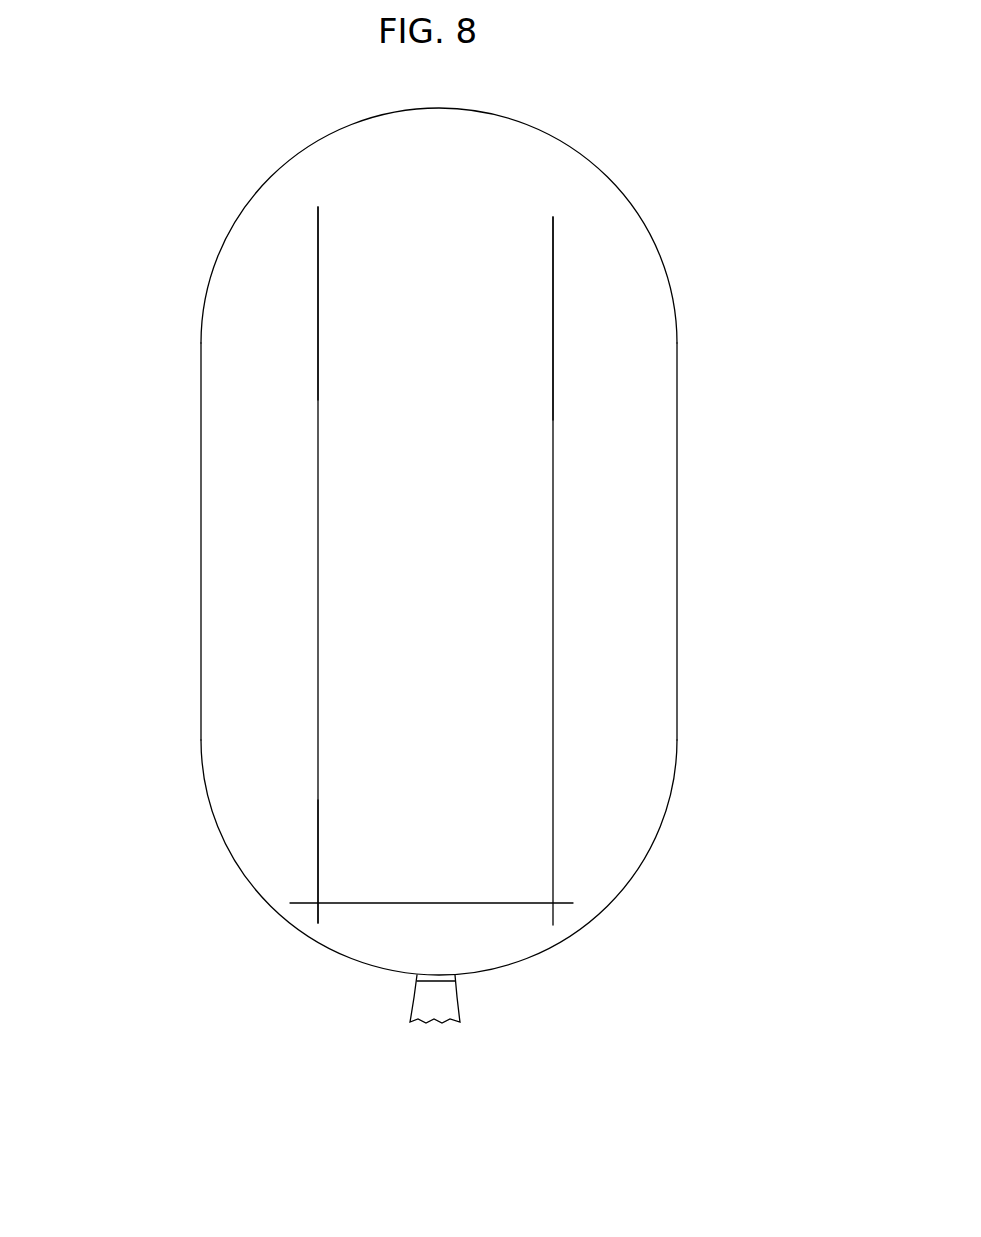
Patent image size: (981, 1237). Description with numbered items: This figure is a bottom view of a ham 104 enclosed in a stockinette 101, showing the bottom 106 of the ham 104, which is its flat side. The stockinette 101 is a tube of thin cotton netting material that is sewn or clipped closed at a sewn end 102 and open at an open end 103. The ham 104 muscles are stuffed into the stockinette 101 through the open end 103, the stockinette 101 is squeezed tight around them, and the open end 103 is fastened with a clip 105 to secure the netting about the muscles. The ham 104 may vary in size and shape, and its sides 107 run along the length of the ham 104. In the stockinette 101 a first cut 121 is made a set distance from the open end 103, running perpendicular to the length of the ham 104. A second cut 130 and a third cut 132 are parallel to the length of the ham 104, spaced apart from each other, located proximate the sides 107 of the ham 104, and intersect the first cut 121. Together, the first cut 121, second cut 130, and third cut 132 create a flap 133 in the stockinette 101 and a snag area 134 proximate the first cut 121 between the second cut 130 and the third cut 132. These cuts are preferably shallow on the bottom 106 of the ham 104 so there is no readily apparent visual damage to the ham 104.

The stockinette 101 is at (407, 522).
The sewn end 102 is at (523, 111).
The open end 103 is at (437, 1043).
The ham 104 is at (163, 802).
The clip 105 is at (455, 977).
The bottom 106 is at (284, 229).
The sides 107 is at (686, 247).
The first cut 121 is at (503, 905).
The second cut 130 is at (553, 457).
The third cut 132 is at (317, 535).
The flap 133 is at (489, 389).
The snag area 134 is at (408, 855).